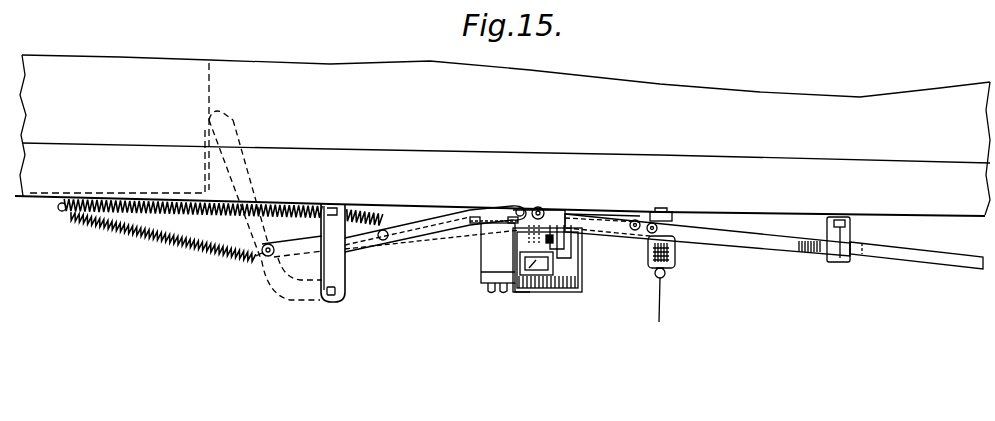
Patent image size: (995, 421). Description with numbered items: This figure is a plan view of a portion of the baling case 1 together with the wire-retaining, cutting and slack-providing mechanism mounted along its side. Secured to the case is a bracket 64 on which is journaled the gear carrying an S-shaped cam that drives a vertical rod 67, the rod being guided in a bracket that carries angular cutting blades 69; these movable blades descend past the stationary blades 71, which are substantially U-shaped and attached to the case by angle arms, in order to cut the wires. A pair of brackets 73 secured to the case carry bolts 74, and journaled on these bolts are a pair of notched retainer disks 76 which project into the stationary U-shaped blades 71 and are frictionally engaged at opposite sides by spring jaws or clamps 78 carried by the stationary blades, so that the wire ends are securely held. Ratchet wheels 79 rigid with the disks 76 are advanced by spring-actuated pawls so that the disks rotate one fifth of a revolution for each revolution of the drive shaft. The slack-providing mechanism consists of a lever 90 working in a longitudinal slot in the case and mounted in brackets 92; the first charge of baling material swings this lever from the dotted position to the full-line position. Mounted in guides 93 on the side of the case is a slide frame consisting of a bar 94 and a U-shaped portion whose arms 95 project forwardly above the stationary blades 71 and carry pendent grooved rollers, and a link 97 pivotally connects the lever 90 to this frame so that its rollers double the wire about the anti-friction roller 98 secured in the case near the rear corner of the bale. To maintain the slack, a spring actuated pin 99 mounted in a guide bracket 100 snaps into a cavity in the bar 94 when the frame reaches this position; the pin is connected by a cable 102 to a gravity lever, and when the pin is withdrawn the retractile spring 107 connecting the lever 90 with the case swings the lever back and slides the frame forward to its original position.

The table board 1 is at (474, 143).
The bracket 64 is at (583, 290).
The vertical rod 67 is at (520, 292).
The angular cutting blades 69 is at (571, 236).
The stationary blades 71 is at (562, 234).
The brackets 73 is at (482, 266).
The bolts 74 is at (490, 290).
The disks 76 is at (505, 226).
The spring jaws or clamps 78 is at (548, 236).
The ratchet wheels 79 is at (565, 290).
The lever 90 is at (250, 232).
The brackets 92 is at (322, 232).
The guides 93 is at (842, 262).
The bar 94 is at (929, 259).
The arms 95 is at (773, 247).
The link 97 is at (410, 245).
The anti-friction roller 98 is at (628, 212).
The spring actuated pin 99 is at (665, 277).
The guide bracket 100 is at (676, 262).
The cable 102 is at (655, 312).
The retractile spring 107 is at (162, 232).